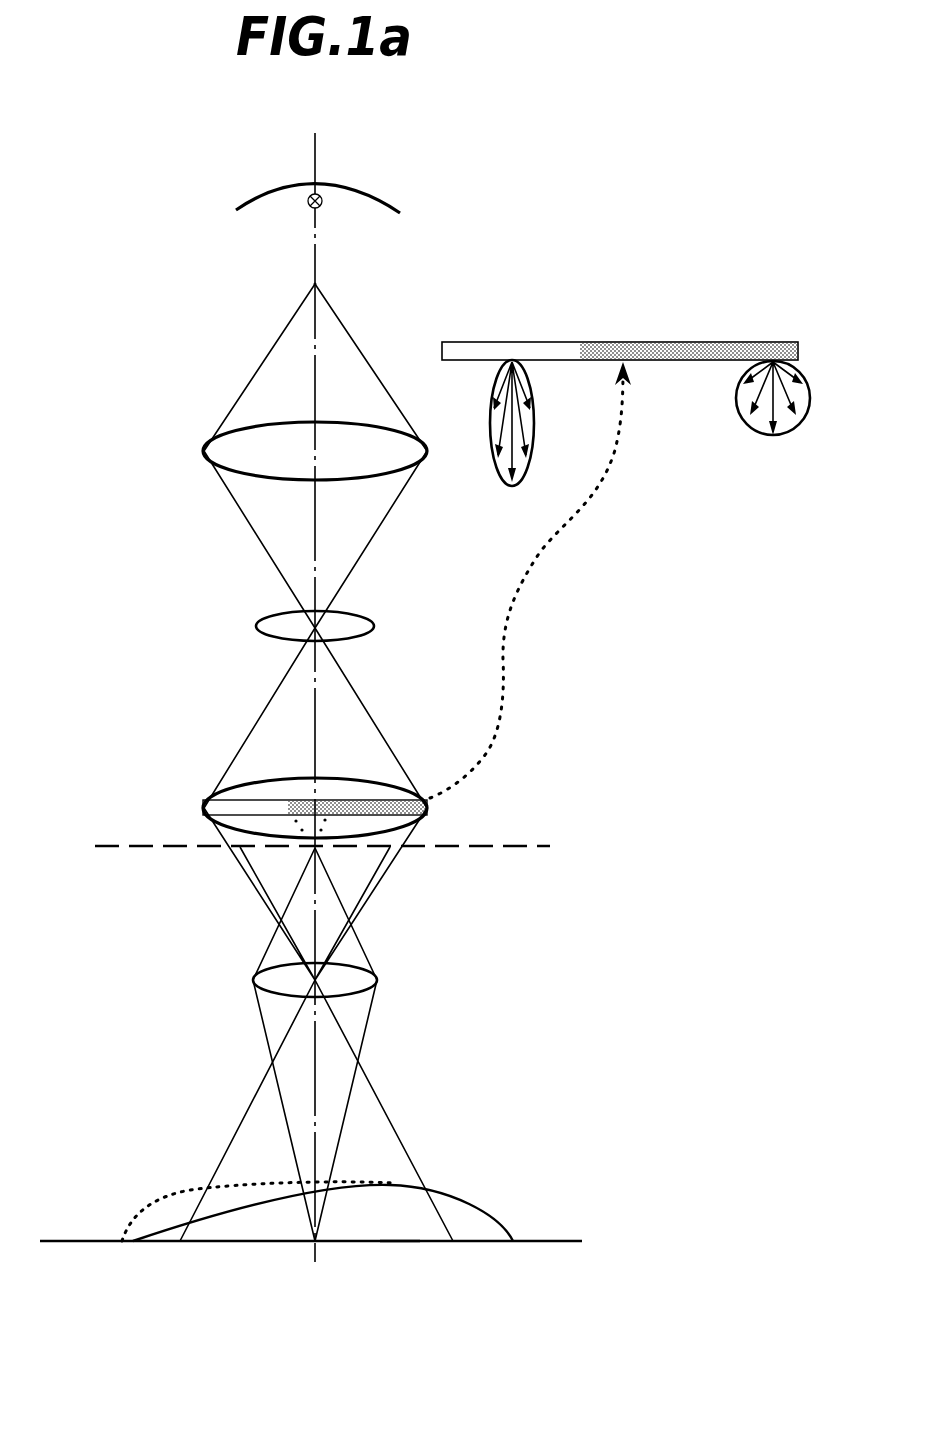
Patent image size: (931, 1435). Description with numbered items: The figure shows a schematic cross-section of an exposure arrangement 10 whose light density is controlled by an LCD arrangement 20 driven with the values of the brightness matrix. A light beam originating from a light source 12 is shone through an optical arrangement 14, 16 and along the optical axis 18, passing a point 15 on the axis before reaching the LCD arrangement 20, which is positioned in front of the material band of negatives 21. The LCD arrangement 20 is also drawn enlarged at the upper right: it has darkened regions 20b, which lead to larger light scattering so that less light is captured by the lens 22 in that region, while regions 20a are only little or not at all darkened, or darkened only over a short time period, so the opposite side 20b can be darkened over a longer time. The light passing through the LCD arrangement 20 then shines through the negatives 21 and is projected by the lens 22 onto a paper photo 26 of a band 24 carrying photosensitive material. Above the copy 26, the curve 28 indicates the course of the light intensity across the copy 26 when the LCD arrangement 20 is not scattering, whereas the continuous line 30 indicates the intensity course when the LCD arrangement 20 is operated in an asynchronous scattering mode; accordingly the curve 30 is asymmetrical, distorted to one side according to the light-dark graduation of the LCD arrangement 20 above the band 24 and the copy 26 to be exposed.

The exposure arrangement 10 is at (522, 926).
The light source 12 is at (308, 202).
The optical arrangement 14 is at (205, 450).
The light source image point 15 is at (313, 284).
The optical arrangement 16 is at (255, 624).
The optical axis 18 is at (310, 712).
The LCD arrangement 20 is at (203, 805).
The regions 20a is at (512, 488).
The darkened regions 20b is at (775, 437).
The material band of negatives 21 is at (182, 850).
The lens 22 is at (253, 978).
The band 24 is at (582, 1243).
The paper photo 26 is at (400, 1243).
The curve 28 is at (183, 1192).
The continuous line 30 is at (442, 1190).